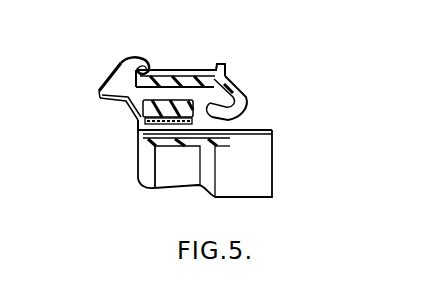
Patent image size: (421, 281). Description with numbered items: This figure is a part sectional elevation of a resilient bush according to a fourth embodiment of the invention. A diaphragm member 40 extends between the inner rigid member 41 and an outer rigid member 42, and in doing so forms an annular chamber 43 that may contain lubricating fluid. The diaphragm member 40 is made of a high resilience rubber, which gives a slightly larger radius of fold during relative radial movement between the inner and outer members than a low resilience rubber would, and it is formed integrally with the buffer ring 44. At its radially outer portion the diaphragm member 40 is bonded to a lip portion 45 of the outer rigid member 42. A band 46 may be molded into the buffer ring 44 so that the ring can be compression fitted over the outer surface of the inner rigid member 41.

The diaphragm member 40 is at (102, 94).
The inner rigid member 41 is at (258, 108).
The outer rigid member 42 is at (173, 70).
The annular chamber 43 is at (231, 89).
The buffer ring 44 is at (141, 119).
The lip portion 45 is at (141, 62).
The band 46 is at (160, 124).